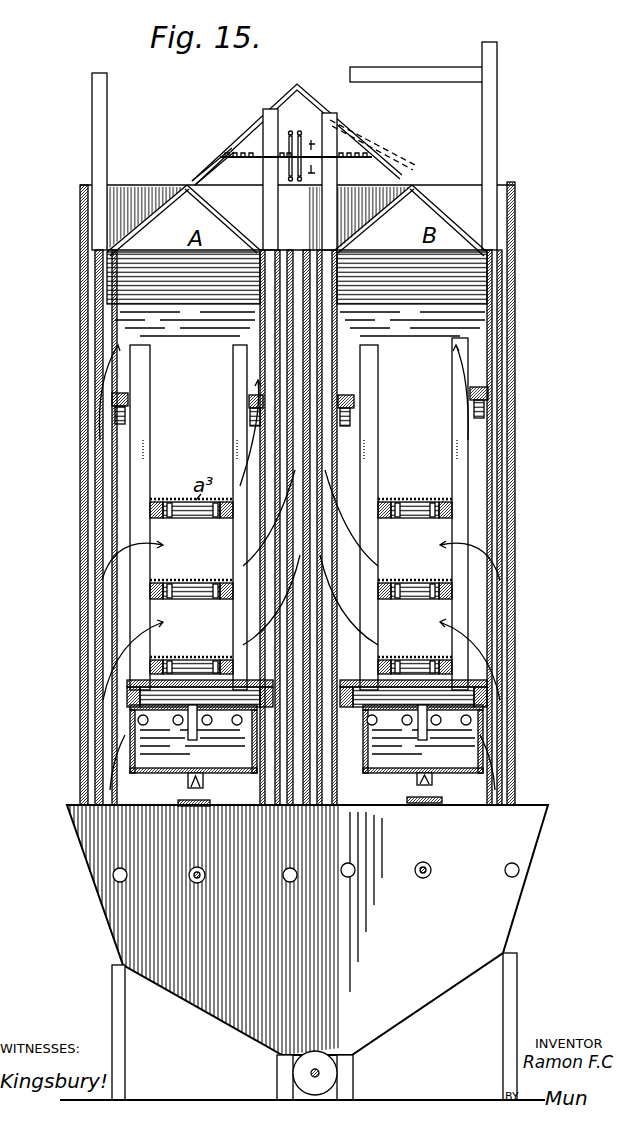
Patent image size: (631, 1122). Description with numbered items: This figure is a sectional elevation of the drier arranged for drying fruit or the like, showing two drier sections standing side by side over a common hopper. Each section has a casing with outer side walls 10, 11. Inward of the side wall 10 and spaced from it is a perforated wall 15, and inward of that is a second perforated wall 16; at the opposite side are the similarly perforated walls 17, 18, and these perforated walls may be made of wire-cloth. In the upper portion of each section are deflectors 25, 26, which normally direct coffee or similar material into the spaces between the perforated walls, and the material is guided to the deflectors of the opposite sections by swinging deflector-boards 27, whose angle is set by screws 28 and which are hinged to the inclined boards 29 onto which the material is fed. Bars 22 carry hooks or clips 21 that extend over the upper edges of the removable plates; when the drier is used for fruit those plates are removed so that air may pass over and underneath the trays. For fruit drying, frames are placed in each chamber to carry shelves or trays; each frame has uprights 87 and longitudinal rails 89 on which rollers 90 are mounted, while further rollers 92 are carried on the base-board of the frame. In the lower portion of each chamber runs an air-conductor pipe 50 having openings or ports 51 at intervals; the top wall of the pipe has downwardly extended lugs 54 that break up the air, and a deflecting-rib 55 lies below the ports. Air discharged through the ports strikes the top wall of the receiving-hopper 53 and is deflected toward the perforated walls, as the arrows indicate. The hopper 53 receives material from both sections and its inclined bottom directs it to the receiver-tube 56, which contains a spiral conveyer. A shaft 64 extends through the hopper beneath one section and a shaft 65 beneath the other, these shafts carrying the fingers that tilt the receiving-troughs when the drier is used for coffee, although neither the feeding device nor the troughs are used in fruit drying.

The side wall 10 is at (81, 416).
The side wall 11 is at (297, 354).
The perforated wall 15 is at (115, 330).
The perforated wall 16 is at (104, 363).
The perforated wall 17 is at (280, 317).
The perforated wall 18 is at (248, 336).
The hooks or clips 21 is at (126, 395).
The bars 22 is at (126, 420).
The deflector 25 is at (165, 216).
The deflector 26 is at (224, 221).
The swinging deflector-board 27 is at (196, 178).
The screws 28 is at (252, 161).
The inclined board 29 is at (283, 110).
The air-conductor pipe 50 is at (306, 741).
The openings or ports 51 is at (205, 782).
The receiving-hopper 53 is at (307, 930).
The lugs or projections 54 is at (198, 742).
The deflecting-rib 55 is at (186, 801).
The receiver-tube 56 is at (332, 1073).
The shaft 64 is at (203, 872).
The shaft 65 is at (430, 868).
The uprights 87 is at (150, 442).
The longitudinal rails 89 is at (232, 522).
The rollers 90 is at (214, 579).
The rollers 92 is at (193, 656).